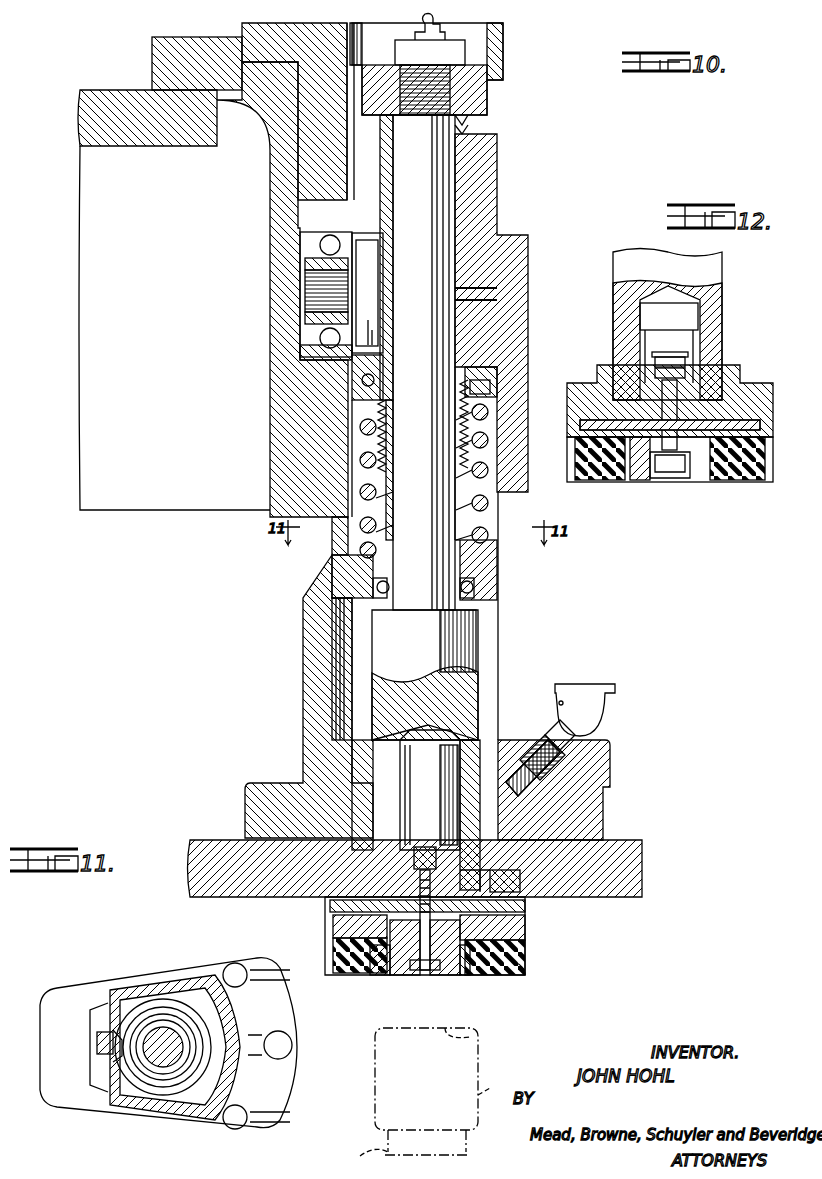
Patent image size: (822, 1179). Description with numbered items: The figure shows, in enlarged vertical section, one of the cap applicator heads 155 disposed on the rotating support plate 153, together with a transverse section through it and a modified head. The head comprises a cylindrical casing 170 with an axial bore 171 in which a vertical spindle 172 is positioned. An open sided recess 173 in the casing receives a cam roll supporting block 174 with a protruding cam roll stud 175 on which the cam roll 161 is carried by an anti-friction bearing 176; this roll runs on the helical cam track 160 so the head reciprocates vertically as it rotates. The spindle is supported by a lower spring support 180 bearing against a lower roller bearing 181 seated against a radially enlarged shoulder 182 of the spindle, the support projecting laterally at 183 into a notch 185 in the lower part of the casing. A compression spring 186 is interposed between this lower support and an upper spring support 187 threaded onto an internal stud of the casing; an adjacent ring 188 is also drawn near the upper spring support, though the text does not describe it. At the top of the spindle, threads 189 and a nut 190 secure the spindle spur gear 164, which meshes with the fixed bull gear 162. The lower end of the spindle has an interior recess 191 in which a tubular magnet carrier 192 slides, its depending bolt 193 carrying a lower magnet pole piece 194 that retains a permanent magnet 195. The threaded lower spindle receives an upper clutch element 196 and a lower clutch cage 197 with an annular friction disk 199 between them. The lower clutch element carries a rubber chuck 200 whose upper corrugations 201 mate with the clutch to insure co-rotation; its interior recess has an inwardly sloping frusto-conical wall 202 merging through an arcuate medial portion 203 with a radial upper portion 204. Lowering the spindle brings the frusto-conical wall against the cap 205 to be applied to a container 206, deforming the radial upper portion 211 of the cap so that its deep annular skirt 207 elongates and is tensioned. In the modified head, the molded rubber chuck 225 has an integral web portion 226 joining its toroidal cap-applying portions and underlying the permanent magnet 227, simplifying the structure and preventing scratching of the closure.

In FIG. 10, the support plate 153 is at (642, 882).
In FIG. 10, the applicator head 155 is at (565, 628).
In FIG. 10, the helical cam track 160 is at (330, 376).
In FIG. 10, the cam follower 161 is at (320, 348).
In FIG. 10, the bull gear 162 is at (330, 30).
In FIG. 10, the spindle spur gear 164 is at (492, 50).
In FIG. 10, the casing 170 is at (495, 190).
In FIG. 10, the axial bore 171 is at (392, 170).
In FIG. 10, the spindle 172 is at (437, 152).
In FIG. 11, the spindle 172 is at (160, 1060).
In FIG. 10, the open sided recess 173 is at (375, 240).
In FIG. 10, the cam roll supporting block 174 is at (368, 315).
In FIG. 10, the cam roll stud 175 is at (325, 296).
In FIG. 10, the anti-friction bearing 176 is at (322, 245).
In FIG. 10, the lower spring support 180 is at (497, 572).
In FIG. 11, the lower spring support 180 is at (207, 1030).
In FIG. 10, the lower roller bearing 181 is at (480, 592).
In FIG. 10, the radially enlarged shoulder 182 is at (433, 644).
In FIG. 10, the lateral projection 183 is at (335, 565).
In FIG. 11, the lateral projection 183 is at (110, 1052).
In FIG. 10, the notch 185 is at (330, 705).
In FIG. 11, the notch 185 is at (97, 1040).
In FIG. 10, the compression spring 186 is at (488, 508).
In FIG. 11, the compression spring 186 is at (205, 1062).
In FIG. 10, the upper spring support 187 is at (495, 372).
In FIG. 10, the seal ring 188 is at (482, 392).
In FIG. 10, the threads 189 is at (450, 100).
In FIG. 10, the nut 190 is at (440, 40).
In FIG. 10, the interior recess 191 is at (465, 748).
In FIG. 10, the tubular magnet carrier 192 is at (438, 845).
In FIG. 10, the depending bolt 193 is at (430, 972).
In FIG. 10, the lower magnet pole piece 194 is at (458, 972).
In FIG. 10, the permanent magnet 195 is at (405, 975).
In FIG. 10, the upper clutch element 196 is at (494, 871).
In FIG. 10, the lower clutch cage 197 is at (527, 928).
In FIG. 10, the annular friction disk 199 is at (505, 906).
In FIG. 10, the rubber chuck 200 is at (522, 972).
In FIG. 10, the corrugations 201 is at (525, 945).
In FIG. 10, the frusto-conical wall 202 is at (375, 972).
In FIG. 10, the arcuate medial portion 203 is at (388, 972).
In FIG. 10, the radial upper portion 204 is at (470, 968).
In FIG. 10, the cap 205 is at (458, 1075).
In FIG. 10, the container 206 is at (362, 1156).
In FIG. 10, the annular skirt 207 is at (496, 1085).
In FIG. 10, the radial upper portion of the cap 211 is at (478, 1037).
In FIG. 12, the molded rubber chuck 225 is at (740, 470).
In FIG. 12, the integral web portion 226 is at (668, 480).
In FIG. 12, the permanent magnet 227 is at (640, 470).